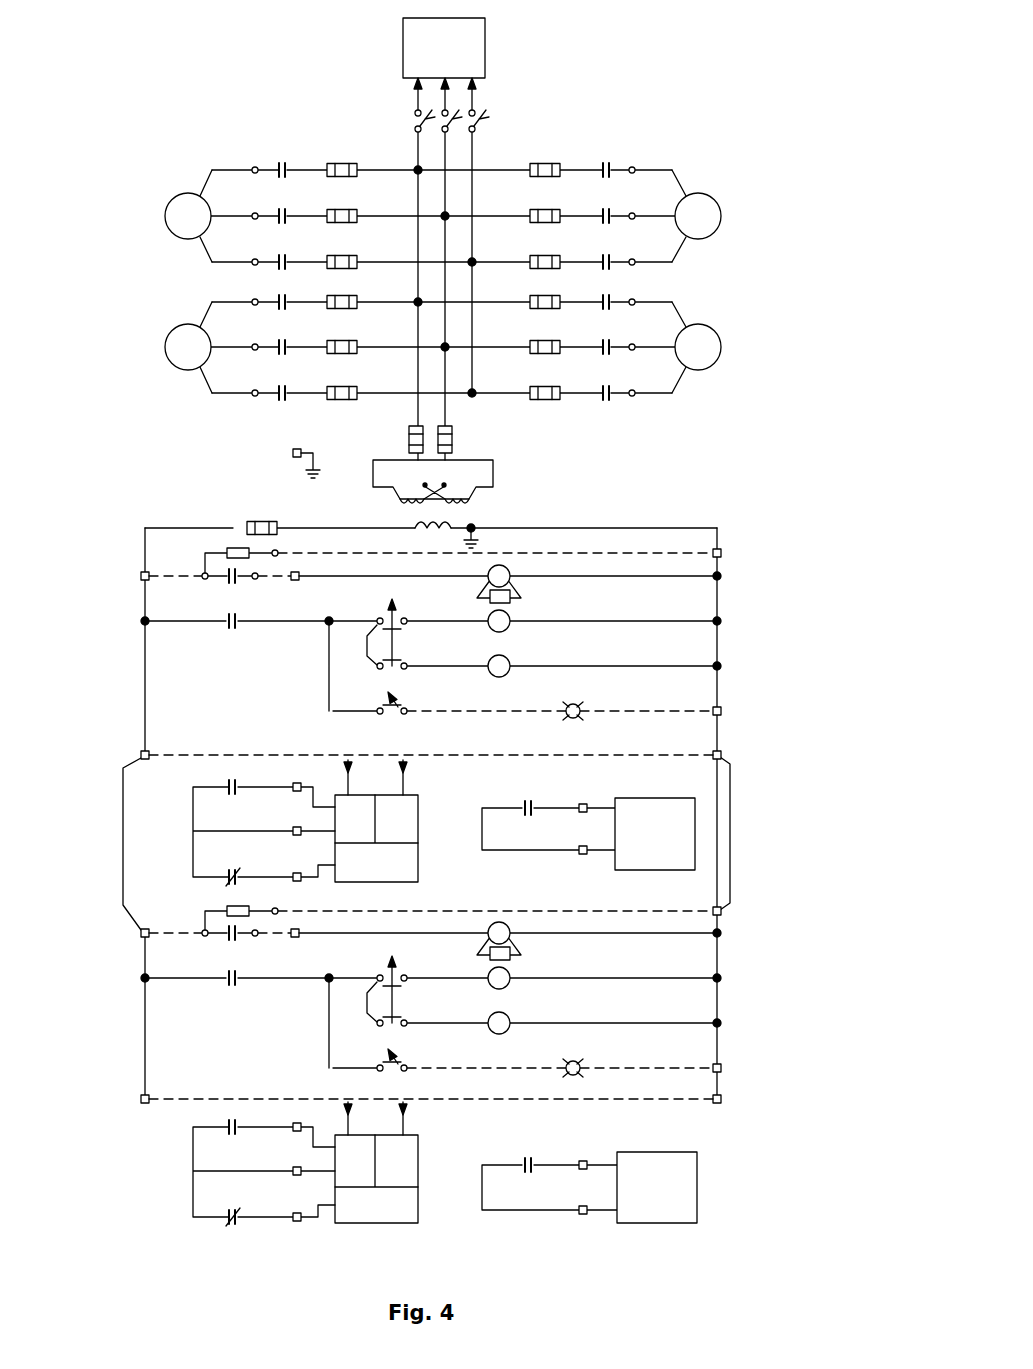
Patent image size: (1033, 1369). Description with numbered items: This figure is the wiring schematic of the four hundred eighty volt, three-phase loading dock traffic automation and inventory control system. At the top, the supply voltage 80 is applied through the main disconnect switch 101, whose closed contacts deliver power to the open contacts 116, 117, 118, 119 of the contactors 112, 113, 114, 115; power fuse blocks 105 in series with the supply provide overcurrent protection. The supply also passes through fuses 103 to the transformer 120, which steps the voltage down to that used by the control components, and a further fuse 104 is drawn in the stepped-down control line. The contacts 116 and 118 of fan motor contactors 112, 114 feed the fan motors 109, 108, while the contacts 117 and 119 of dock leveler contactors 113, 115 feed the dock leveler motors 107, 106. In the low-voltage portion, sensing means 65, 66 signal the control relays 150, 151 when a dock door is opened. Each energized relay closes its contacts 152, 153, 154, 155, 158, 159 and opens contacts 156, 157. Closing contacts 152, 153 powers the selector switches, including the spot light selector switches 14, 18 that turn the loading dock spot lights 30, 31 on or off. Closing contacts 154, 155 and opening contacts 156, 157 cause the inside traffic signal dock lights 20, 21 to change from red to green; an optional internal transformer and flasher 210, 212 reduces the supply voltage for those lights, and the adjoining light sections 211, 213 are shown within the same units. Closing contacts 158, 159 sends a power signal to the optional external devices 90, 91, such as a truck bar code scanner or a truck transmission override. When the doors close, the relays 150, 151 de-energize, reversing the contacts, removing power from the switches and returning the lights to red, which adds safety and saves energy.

The supply voltage 80 is at (456, 50).
The main disconnect switch 101 is at (404, 121).
The power fuse blocks 105 is at (545, 136).
The fuses 103 is at (453, 437).
The fuse 104 is at (262, 520).
The fan motor 109 is at (175, 216).
The fan motor 108 is at (706, 216).
The dock leveler motor 107 is at (175, 348).
The dock leveler motor 106 is at (706, 348).
The contacts 116 is at (281, 276).
The contacts 118 is at (605, 276).
The contacts 117 is at (281, 407).
The contacts 119 is at (605, 407).
The transformer 120 is at (476, 507).
The sensing means 65 is at (226, 565).
The control relay 150 is at (501, 565).
The contacts 152 is at (232, 632).
The fan motor contactor 112 is at (510, 612).
The dock leveler contactor 113 is at (510, 658).
The loading dock spot light selector switch 14 is at (389, 716).
The loading dock spot light 30 is at (580, 706).
The contacts 154 is at (240, 778).
The contacts 156 is at (243, 867).
The sensing means 66 is at (217, 922).
The internal transformer and flasher 210 is at (357, 818).
The controller section 211 is at (400, 830).
The inside traffic signal dock light 20 is at (400, 856).
The contacts 158 is at (530, 803).
The truck control notification automation system 90 is at (677, 832).
The control relay 151 is at (508, 923).
The fan motor contactor 114 is at (510, 970).
The dock leveler contactor 115 is at (510, 1015).
The contacts 153 is at (232, 990).
The loading dock spot light 31 is at (580, 1063).
The loading dock spot light selector switch 18 is at (389, 1074).
The contacts 155 is at (240, 1118).
The contacts 157 is at (243, 1207).
The internal transformer and flasher 212 is at (357, 1160).
The controller section 213 is at (398, 1172).
The inside traffic signal dock light 21 is at (400, 1197).
The contacts 159 is at (531, 1152).
The truck control notification automation system 91 is at (677, 1187).